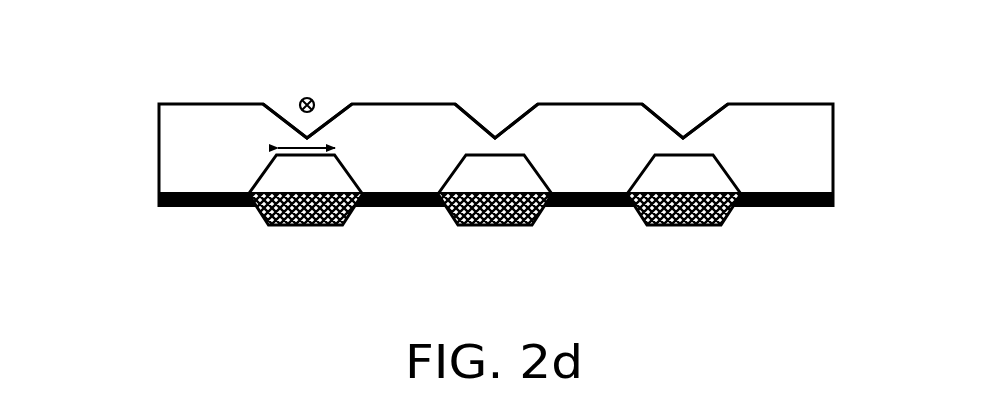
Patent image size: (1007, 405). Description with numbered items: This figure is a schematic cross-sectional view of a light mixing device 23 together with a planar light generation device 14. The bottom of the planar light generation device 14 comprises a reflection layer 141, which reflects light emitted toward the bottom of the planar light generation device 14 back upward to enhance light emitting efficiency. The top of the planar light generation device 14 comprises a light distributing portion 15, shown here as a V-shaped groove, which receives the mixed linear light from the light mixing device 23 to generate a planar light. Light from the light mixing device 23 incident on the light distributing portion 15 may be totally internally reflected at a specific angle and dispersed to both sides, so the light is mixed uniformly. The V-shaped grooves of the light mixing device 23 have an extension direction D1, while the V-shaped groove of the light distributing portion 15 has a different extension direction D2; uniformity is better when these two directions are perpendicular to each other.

The planar light generation device 14 is at (195, 140).
The reflection layer 141 is at (833, 202).
The light distributing portion 15 is at (343, 110).
The light mixing device 23 is at (297, 180).
The extension direction D1 is at (288, 140).
The extension direction D2 is at (298, 102).